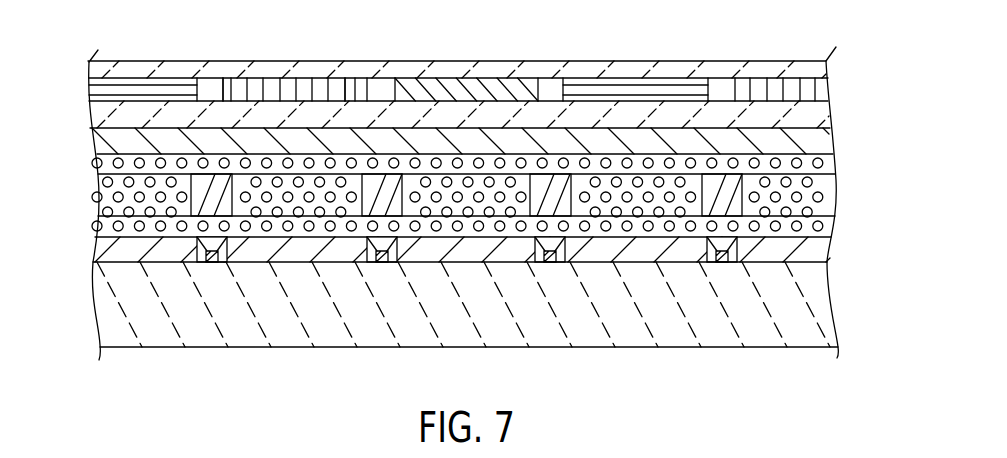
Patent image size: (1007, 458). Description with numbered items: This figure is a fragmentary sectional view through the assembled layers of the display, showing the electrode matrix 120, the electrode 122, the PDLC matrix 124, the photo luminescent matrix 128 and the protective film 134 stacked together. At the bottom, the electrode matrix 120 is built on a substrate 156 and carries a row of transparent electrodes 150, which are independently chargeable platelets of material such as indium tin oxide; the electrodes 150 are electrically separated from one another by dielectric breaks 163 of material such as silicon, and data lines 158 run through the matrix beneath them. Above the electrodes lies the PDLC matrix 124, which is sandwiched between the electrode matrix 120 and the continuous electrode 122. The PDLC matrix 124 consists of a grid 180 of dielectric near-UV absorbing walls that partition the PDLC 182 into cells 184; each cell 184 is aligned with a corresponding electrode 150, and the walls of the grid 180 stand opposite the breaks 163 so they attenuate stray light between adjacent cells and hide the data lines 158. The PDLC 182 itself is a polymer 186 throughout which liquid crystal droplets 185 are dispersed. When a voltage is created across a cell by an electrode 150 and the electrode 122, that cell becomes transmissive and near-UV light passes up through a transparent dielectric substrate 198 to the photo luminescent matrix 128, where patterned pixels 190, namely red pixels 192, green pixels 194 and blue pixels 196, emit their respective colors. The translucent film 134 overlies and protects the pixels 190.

The electrode matrix 120 is at (435, 318).
The electrode 122 is at (92, 147).
The PDLC matrix 124 is at (460, 207).
The photo luminescent matrix 128 is at (89, 90).
The protective film 134 is at (90, 61).
The electrodes 150 is at (828, 249).
The substrate 156 is at (702, 338).
The data lines 158 is at (451, 319).
The dielectric breaks 163 is at (234, 262).
The grid 180 is at (767, 262).
The PDLC 182 is at (827, 215).
The cells 184 is at (833, 153).
The liquid crystal droplets 185 is at (750, 181).
The polymer 186 is at (830, 226).
The pixels 190 is at (288, 74).
The red pixels 192 is at (515, 80).
The green pixels 194 is at (345, 77).
The blue pixels 196 is at (148, 88).
The transparent dielectric substrate 198 is at (90, 123).